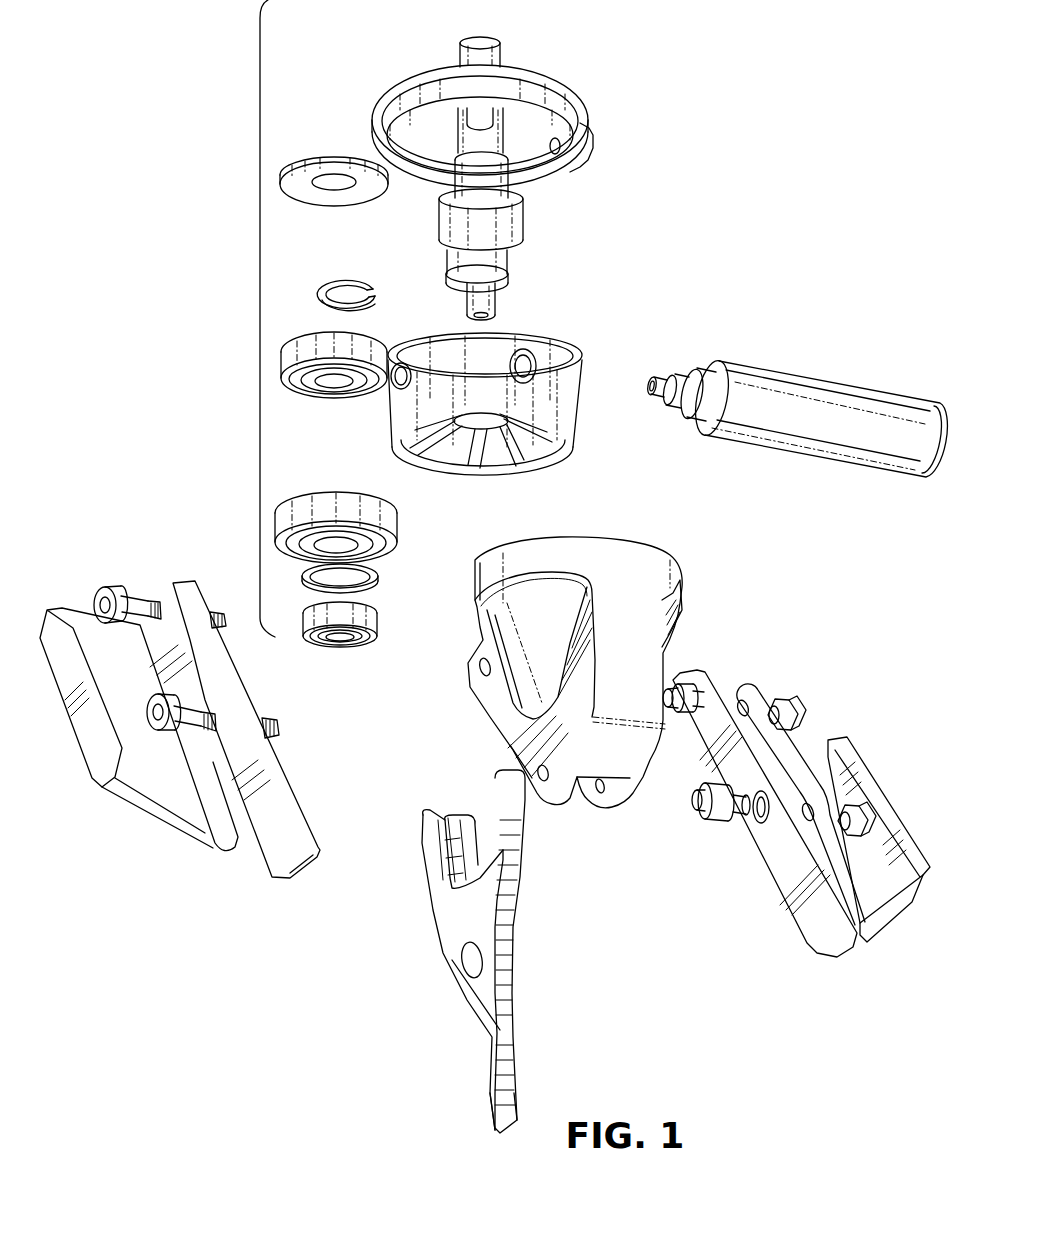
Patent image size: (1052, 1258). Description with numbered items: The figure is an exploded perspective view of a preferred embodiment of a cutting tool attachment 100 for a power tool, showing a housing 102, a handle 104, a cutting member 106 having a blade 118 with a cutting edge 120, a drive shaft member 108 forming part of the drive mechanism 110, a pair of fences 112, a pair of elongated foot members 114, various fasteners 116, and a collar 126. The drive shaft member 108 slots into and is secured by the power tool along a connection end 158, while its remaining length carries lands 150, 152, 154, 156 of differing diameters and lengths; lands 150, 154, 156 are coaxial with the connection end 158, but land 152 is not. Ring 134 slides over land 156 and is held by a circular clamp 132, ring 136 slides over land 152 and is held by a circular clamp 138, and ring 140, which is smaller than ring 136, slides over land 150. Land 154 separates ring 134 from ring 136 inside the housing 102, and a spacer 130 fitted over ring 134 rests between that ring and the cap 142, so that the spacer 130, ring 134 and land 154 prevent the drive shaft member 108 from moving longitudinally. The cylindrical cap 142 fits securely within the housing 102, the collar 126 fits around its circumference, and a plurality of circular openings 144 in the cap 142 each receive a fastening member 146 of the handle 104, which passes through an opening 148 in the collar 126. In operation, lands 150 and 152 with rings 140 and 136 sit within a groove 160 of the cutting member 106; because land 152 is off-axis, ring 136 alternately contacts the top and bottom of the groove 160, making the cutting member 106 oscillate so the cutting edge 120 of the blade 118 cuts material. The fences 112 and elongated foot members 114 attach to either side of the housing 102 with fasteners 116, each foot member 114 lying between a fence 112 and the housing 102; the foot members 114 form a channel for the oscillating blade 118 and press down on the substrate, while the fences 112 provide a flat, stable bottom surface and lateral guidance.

The cutting tool attachment 100 is at (740, 268).
The housing 102 is at (628, 543).
The handle 104 is at (880, 388).
The cutting member 106 is at (515, 965).
The drive shaft member 108 is at (503, 58).
The drive mechanism 110 is at (258, 268).
The fences 112 is at (67, 607).
The elongated foot members 114 is at (192, 582).
The fasteners 116 is at (117, 585).
The blade 118 is at (490, 1093).
The cutting edge 120 is at (514, 1093).
The collar 126 is at (592, 124).
The spacer 130 is at (313, 157).
The circular clamp 132 is at (345, 287).
The ring 134 is at (311, 333).
The ring 136 is at (326, 488).
The circular clamp 138 is at (374, 575).
The ring 140 is at (378, 616).
The cap 142 is at (582, 365).
The circular openings 144 is at (402, 363).
The fastening member 146 is at (654, 377).
The opening 148 is at (560, 148).
The land 150 is at (497, 311).
The land 152 is at (508, 266).
The land 154 is at (525, 228).
The land 156 is at (508, 190).
The connection end 158 is at (458, 130).
The groove 160 is at (488, 848).